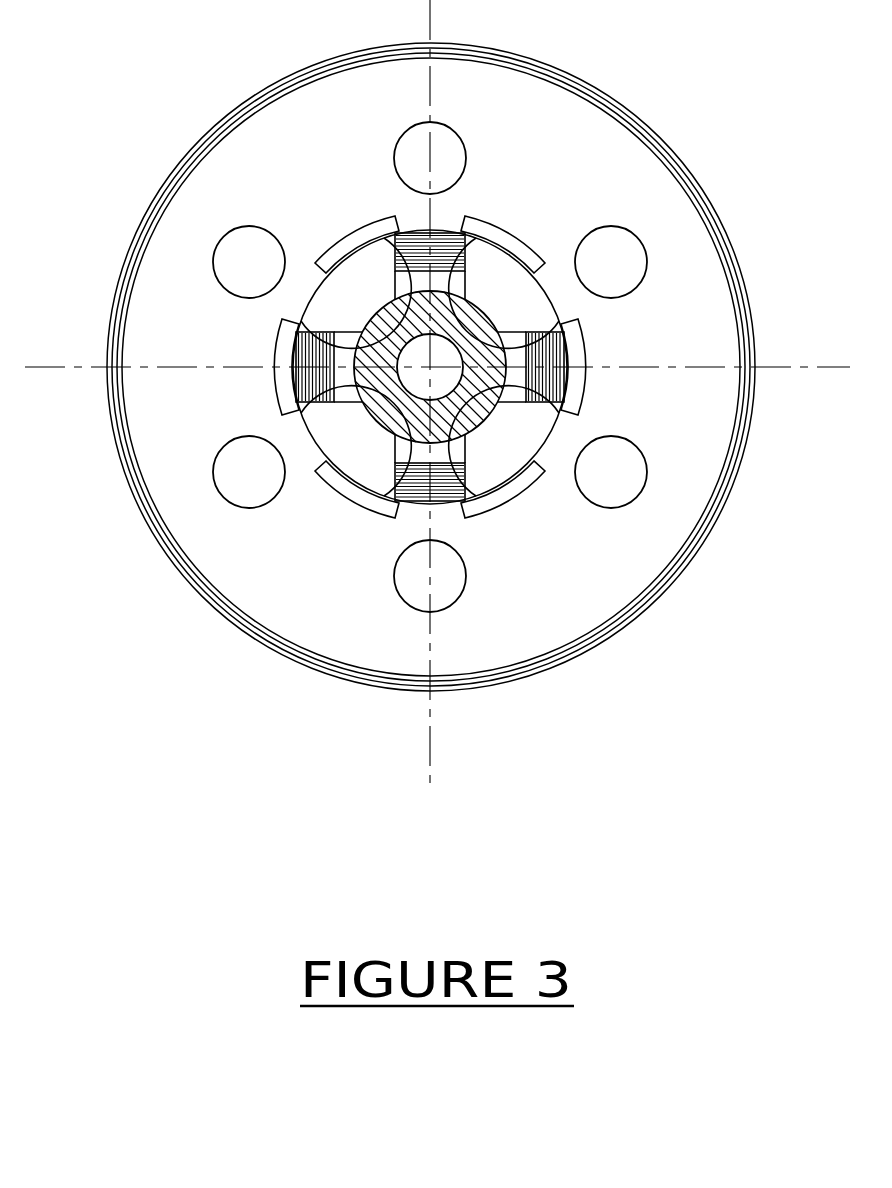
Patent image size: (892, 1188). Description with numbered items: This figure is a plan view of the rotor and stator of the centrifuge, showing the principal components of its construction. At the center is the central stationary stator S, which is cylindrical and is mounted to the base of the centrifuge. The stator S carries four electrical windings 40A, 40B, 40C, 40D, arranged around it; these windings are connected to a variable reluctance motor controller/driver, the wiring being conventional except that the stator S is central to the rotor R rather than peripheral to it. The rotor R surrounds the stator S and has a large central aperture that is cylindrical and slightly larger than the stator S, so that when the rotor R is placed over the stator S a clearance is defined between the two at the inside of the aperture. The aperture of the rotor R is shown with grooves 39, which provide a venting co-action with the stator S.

The central stationary stator S is at (483, 291).
The rotor R is at (672, 507).
The grooves 39 is at (492, 228).
The electrical winding 40A is at (395, 250).
The electrical winding 40B is at (530, 408).
The electrical winding 40C is at (485, 504).
The electrical winding 40D is at (330, 408).